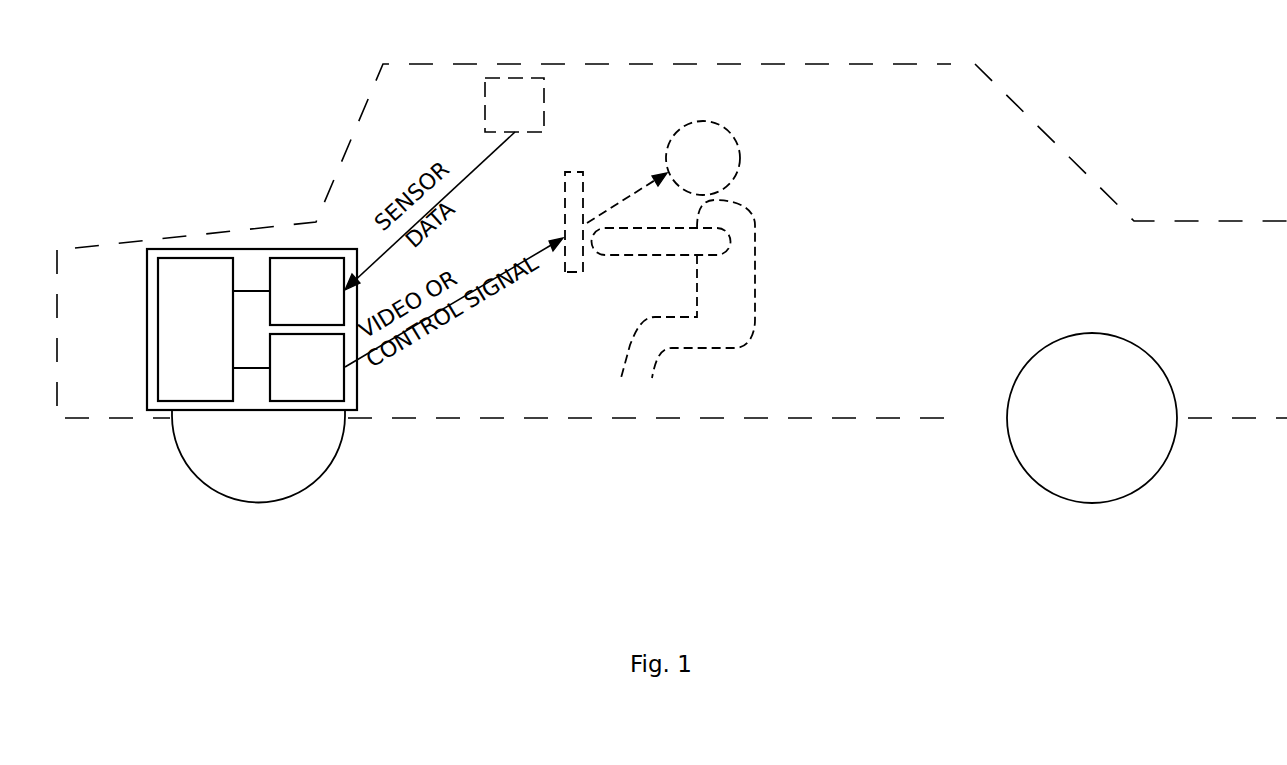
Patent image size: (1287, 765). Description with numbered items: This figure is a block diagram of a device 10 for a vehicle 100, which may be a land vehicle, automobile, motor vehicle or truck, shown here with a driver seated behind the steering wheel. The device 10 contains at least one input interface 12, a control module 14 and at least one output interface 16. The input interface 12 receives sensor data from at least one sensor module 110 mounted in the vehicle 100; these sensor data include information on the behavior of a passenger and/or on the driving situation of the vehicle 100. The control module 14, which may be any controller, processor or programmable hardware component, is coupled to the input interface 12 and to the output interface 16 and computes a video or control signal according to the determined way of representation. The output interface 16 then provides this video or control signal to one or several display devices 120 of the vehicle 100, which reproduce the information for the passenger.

The device 10 is at (246, 346).
The input interface 12 is at (343, 250).
The control module 14 is at (148, 313).
The output interface 16 is at (357, 392).
The vehicle 100 is at (510, 418).
The sensor module 110 is at (544, 90).
The display device 120 is at (578, 272).